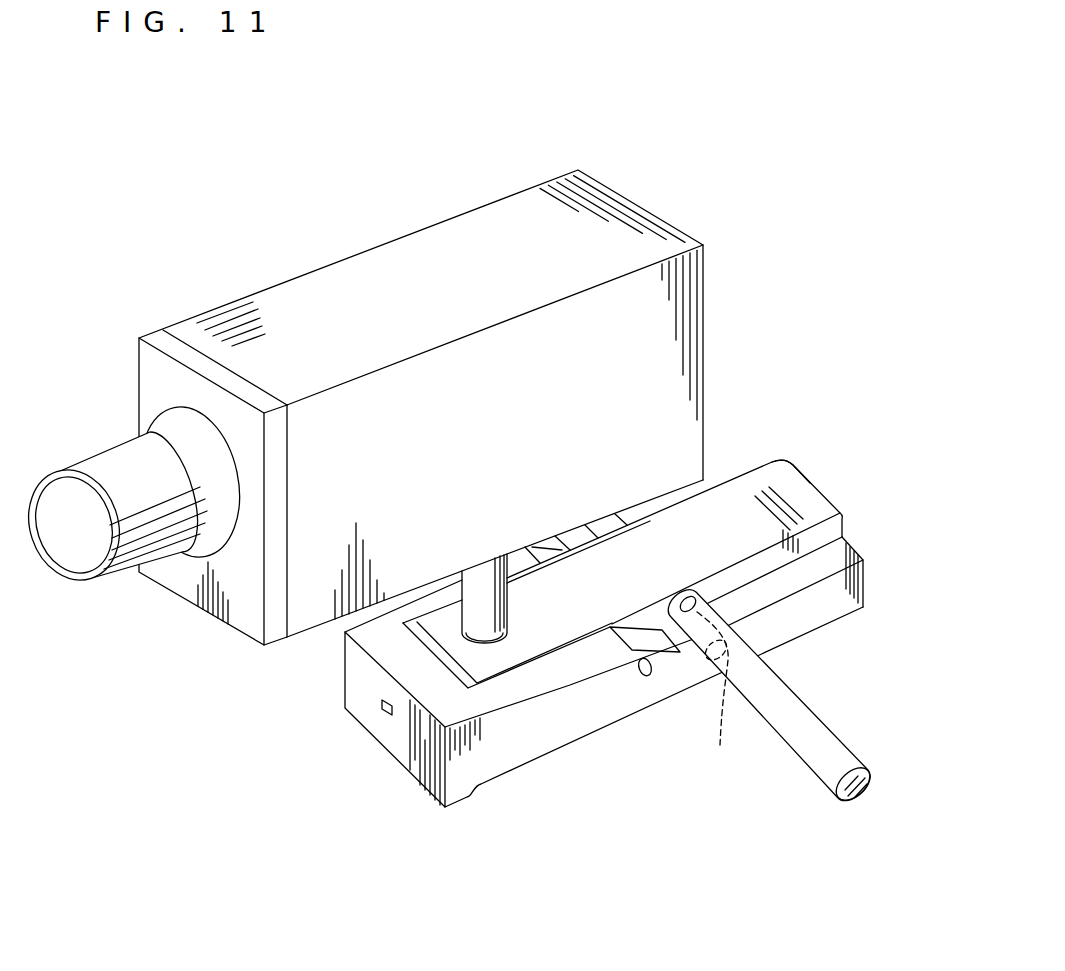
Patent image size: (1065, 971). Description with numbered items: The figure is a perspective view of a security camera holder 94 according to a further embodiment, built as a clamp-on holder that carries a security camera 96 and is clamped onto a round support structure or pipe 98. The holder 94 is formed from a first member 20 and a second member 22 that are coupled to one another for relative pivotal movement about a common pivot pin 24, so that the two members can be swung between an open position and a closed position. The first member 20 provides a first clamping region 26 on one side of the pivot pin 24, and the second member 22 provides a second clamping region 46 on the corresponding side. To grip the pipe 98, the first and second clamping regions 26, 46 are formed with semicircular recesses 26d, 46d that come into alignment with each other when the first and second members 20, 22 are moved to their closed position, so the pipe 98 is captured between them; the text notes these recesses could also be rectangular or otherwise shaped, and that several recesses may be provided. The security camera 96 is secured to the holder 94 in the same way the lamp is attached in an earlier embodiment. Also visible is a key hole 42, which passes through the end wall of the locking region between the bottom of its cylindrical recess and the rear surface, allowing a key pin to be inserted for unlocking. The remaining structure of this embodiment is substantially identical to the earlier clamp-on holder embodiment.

The first member 20 is at (848, 603).
The second member 22 is at (800, 492).
The pivot pin 24 is at (643, 678).
The first clamping region 26 is at (768, 633).
The semicircular recess 26d is at (716, 742).
The key hole 42 is at (383, 712).
The second clamping region 46 is at (738, 492).
The semicircular recess 46d is at (670, 600).
The security camera holder 94 is at (541, 776).
The security camera 96 is at (253, 625).
The pipe 98 is at (818, 745).